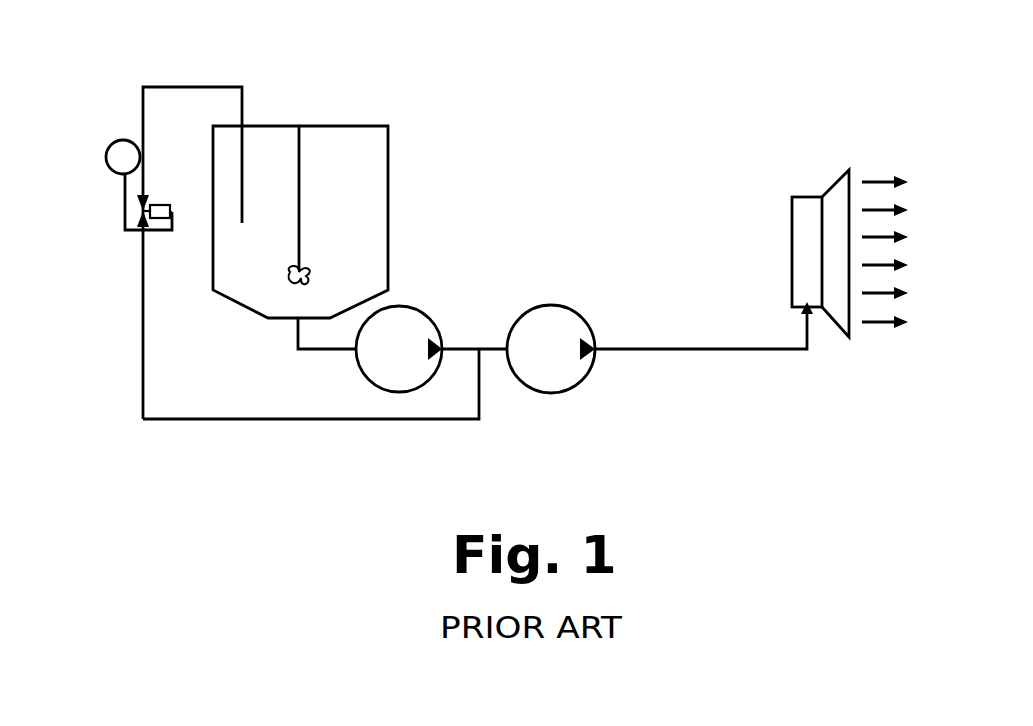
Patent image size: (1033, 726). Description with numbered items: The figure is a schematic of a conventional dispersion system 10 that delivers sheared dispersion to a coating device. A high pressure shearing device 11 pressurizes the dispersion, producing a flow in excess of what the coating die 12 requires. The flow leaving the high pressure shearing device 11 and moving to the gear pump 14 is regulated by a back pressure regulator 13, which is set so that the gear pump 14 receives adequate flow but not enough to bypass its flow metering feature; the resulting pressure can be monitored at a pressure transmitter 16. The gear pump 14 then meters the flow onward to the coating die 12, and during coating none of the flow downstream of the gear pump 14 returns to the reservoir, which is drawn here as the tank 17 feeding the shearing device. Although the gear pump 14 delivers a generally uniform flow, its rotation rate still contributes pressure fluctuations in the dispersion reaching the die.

The conventional dispersion system 10 is at (110, 388).
The high pressure shearing device 11 is at (398, 391).
The coating die 12 is at (830, 300).
The back pressure regulator 13 is at (143, 213).
The gear pump 14 is at (551, 393).
The pressure transmitter 16 is at (108, 149).
The tank with agitator 17 is at (375, 193).